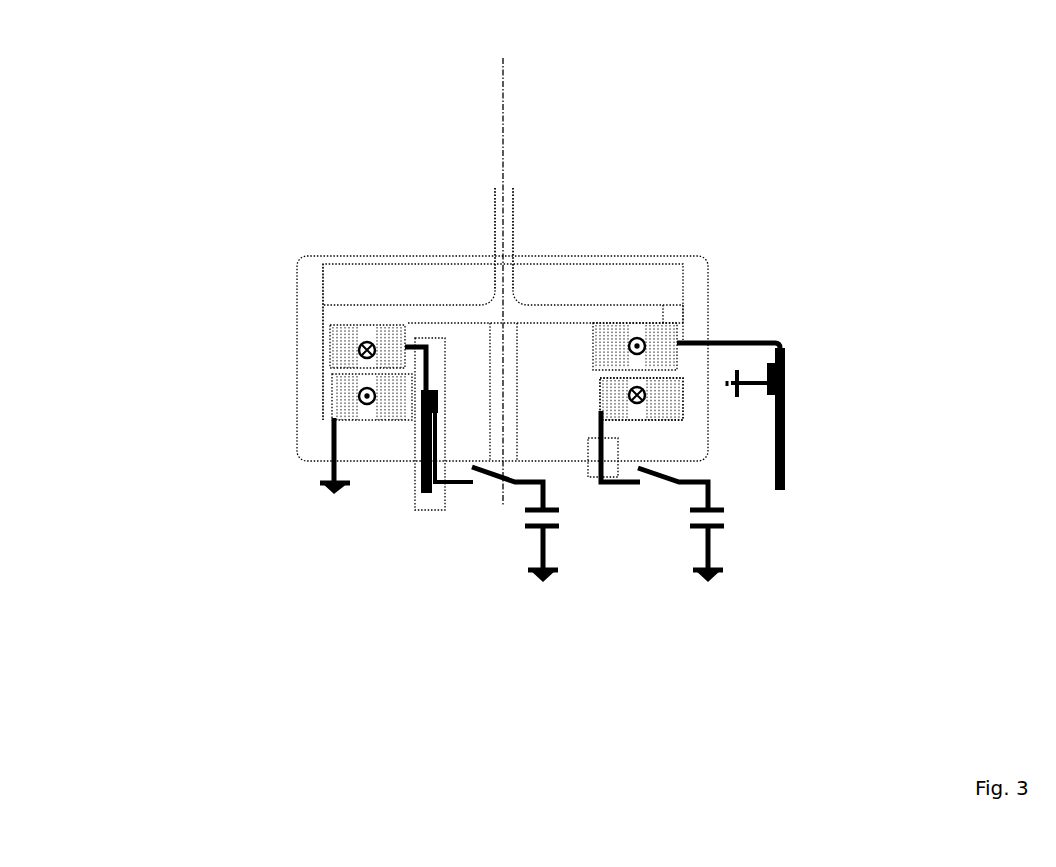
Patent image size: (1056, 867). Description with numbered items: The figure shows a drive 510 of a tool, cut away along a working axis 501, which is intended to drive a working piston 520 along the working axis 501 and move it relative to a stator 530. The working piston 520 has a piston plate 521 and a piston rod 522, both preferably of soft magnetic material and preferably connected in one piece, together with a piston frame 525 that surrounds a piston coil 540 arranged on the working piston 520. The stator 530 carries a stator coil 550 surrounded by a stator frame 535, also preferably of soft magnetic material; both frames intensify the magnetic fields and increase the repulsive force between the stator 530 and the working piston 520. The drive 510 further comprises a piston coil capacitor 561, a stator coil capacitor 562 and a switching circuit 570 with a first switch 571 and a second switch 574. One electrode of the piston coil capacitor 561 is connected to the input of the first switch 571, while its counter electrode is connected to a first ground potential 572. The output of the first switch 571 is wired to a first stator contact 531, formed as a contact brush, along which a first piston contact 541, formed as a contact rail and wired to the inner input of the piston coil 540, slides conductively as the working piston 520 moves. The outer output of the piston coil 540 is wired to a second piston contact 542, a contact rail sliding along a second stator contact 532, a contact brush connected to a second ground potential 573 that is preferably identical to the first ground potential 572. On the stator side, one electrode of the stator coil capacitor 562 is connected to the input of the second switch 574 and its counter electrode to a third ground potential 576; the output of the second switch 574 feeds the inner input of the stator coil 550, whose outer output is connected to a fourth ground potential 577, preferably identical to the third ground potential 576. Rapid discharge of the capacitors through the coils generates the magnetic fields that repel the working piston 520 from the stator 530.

The drive 510 is at (228, 88).
The working axis 501 is at (497, 92).
The working piston 520 is at (396, 120).
The piston plate 521 is at (425, 310).
The piston rod 522 is at (497, 240).
The piston frame 525 is at (598, 343).
The piston coil 540 is at (663, 337).
The stator coil 550 is at (665, 388).
The first stator contact 531 is at (440, 387).
The second stator contact 532 is at (770, 368).
The stator frame 535 is at (465, 433).
The first piston contact 541 is at (419, 462).
The second piston contact 542 is at (785, 440).
The stator 530 is at (416, 700).
The switching circuit 570 is at (546, 685).
The first switch 571 is at (487, 470).
The second switch 574 is at (665, 478).
The piston coil capacitor 561 is at (548, 518).
The stator coil capacitor 562 is at (722, 520).
The first ground potential 572 is at (540, 580).
The third ground potential 576 is at (708, 583).
The fourth ground potential 577 is at (333, 492).
The second ground potential 573 is at (735, 398).